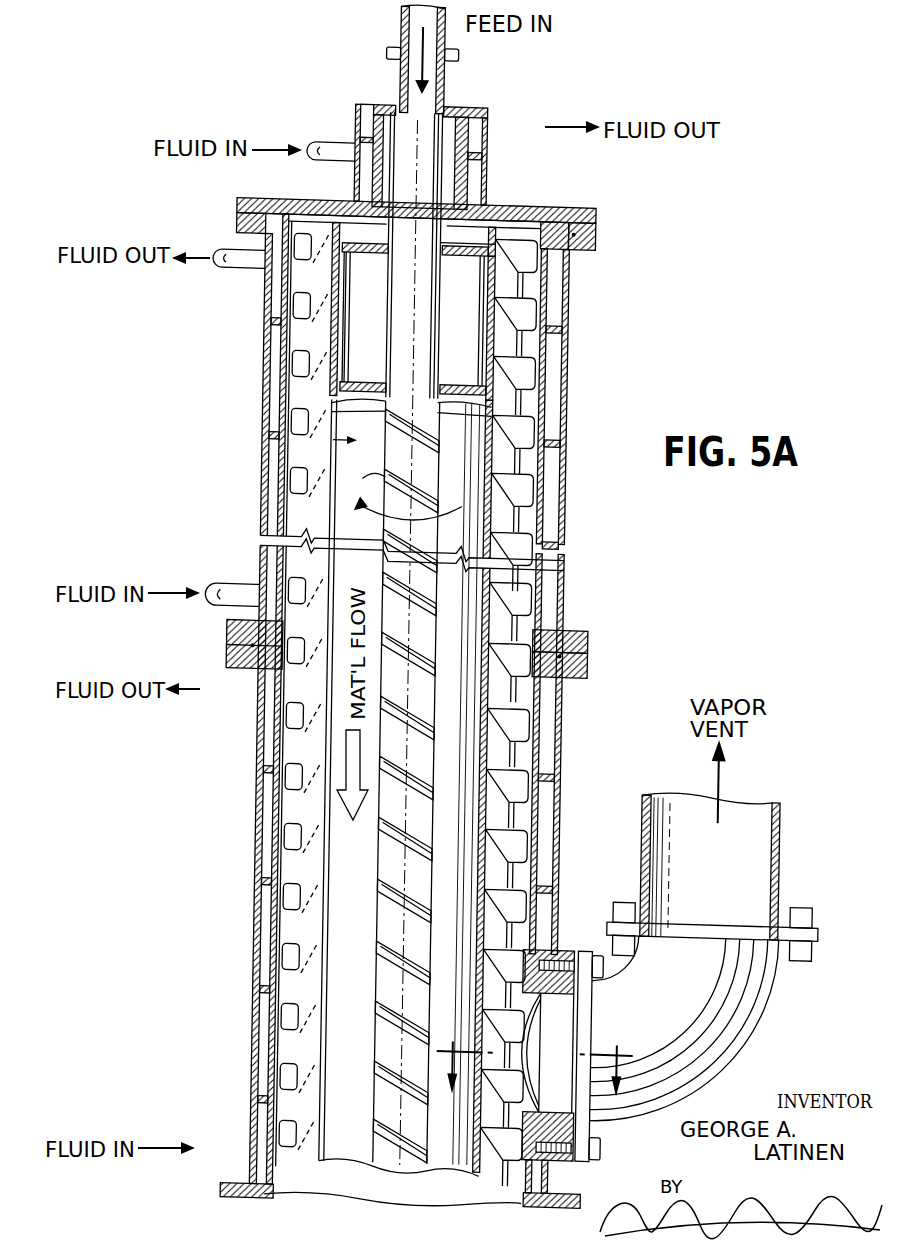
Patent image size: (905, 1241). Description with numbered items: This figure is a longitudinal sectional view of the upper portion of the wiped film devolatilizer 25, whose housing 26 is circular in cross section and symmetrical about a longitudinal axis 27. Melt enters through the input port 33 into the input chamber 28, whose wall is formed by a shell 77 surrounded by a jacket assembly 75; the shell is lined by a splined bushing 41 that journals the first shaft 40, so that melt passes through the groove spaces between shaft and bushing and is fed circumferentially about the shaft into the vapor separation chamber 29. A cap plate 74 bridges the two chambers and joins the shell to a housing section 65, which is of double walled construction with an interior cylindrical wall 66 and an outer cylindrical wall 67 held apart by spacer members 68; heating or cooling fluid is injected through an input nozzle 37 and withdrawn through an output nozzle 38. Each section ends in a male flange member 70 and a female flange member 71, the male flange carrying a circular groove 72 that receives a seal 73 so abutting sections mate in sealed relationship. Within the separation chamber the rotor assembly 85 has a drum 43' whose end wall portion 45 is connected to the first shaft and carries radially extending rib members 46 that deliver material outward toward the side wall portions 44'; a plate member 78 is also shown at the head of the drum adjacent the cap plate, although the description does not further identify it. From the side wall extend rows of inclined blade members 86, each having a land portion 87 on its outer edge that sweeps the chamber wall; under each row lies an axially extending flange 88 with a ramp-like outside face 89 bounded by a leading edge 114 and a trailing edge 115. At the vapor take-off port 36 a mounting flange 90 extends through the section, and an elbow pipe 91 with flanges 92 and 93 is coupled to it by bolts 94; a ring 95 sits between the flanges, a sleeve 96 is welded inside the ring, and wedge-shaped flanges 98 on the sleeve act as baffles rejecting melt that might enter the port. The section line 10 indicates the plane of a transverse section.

The section line 10- 10 is at (544, 1061).
The devolatilizer 25 is at (224, 209).
The housing 26 is at (572, 389).
The longitudinal axis 27 is at (417, 343).
The input chamber 28 is at (346, 111).
The vapor separation chamber 29 is at (542, 457).
The input port 33 is at (412, 80).
The vapor take-off port 36 is at (568, 1041).
The input nozzle 37 is at (237, 583).
The output nozzle 38 is at (247, 257).
The first shaft 40 is at (407, 177).
The splined bushing 41 is at (460, 110).
The drum 43' is at (277, 780).
The side wall portions 44' is at (471, 328).
The end wall portion 45 is at (463, 262).
The rib members 46 is at (495, 230).
The housing section 65 is at (572, 501).
The interior cylindrical wall 66 is at (563, 528).
The outer cylindrical wall 67 is at (560, 593).
The spacer members 68 is at (277, 423).
The male flange member 70 is at (592, 238).
The female flange member 71 is at (590, 637).
The circular groove 72 is at (577, 250).
The seal 73 is at (567, 230).
The cap plate 74 is at (272, 200).
The jacket assembly 75 is at (485, 163).
The shell 77 is at (365, 127).
The barrel top plate 78 is at (488, 243).
The rotor assembly 85 is at (350, 441).
The blade members 86 is at (525, 372).
The land portion 87 is at (387, 430).
The flange 88 is at (390, 1157).
The outside face 89 is at (387, 917).
The mounting flange 90 is at (533, 948).
The elbow pipe 91 is at (740, 1002).
The flange 92 is at (720, 933).
The flange 93 is at (585, 1008).
The bolts 94 is at (598, 1157).
The ring 95 is at (567, 1163).
The sleeve 96 is at (555, 1110).
The wedge-shaped flanges 98 is at (530, 1067).
The leading edge 114 is at (483, 617).
The trailing edge 115 is at (323, 572).